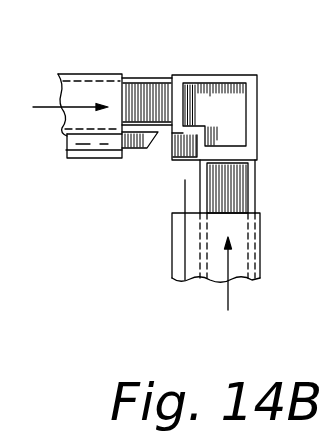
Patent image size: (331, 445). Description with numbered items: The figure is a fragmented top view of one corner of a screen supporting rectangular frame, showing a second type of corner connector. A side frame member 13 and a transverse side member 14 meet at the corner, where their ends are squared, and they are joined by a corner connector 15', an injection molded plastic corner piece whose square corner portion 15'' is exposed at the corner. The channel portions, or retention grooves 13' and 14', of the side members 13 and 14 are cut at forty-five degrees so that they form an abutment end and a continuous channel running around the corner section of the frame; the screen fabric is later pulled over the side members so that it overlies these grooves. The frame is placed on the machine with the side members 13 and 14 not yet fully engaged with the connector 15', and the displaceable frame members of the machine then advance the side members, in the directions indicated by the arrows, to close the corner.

The side frame member 13 is at (77, 135).
The retention groove 13' is at (119, 143).
The square corner portion 15'' is at (214, 96).
The corner connector 15' is at (191, 186).
The retention groove 14' is at (182, 230).
The transverse side member 14 is at (189, 247).